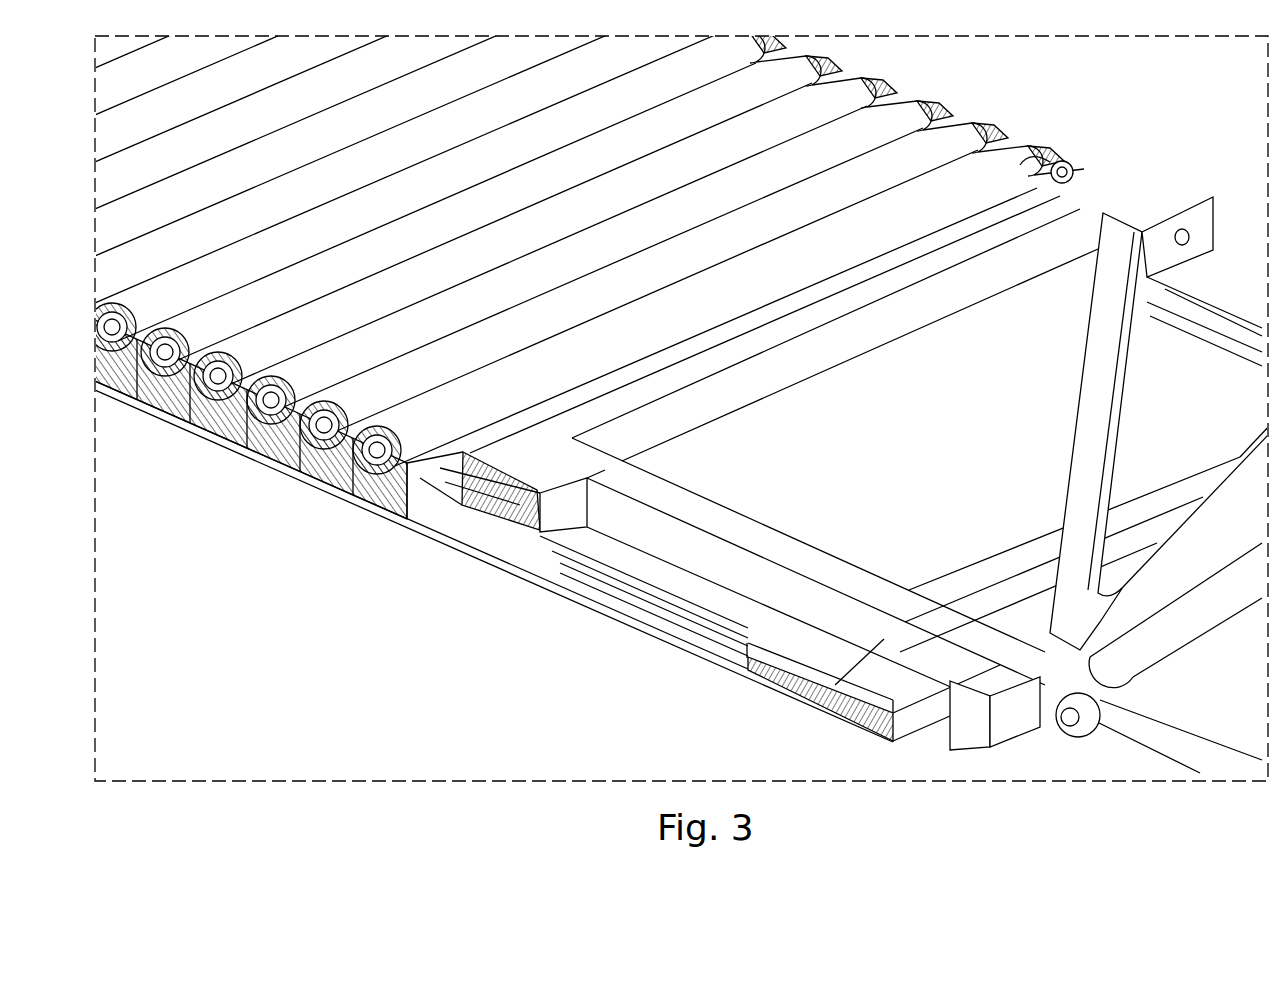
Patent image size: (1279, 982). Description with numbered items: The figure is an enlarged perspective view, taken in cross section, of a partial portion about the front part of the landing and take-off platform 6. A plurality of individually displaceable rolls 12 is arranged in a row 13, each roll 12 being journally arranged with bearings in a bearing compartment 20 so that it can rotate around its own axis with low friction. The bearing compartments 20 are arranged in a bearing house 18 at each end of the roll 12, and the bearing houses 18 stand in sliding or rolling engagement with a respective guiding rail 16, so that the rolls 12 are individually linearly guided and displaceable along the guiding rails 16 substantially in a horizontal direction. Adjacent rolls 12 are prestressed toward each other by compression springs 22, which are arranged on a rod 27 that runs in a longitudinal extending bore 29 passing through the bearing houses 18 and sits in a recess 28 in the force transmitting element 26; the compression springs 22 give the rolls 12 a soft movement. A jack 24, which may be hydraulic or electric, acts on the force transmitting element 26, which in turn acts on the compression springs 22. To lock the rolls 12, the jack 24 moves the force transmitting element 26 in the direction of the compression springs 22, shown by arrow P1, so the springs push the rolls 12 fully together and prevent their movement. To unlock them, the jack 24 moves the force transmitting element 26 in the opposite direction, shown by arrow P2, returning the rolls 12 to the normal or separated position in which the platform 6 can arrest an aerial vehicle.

The landing and take-off platform 6 is at (368, 628).
The roll 12 is at (228, 438).
The row 13 is at (960, 430).
The guiding rail 16 is at (640, 620).
The bearing house 18 is at (858, 80).
The bearing compartment 20 is at (342, 488).
The compression spring 22 is at (1073, 164).
The jack 24 is at (1075, 717).
The force transmitting element 26 is at (810, 705).
The rod 27 is at (1085, 178).
The recess 28 is at (423, 503).
The longitudinal extending bore 29 is at (503, 500).
The arrow P1 is at (1227, 733).
The arrow P2 is at (1128, 766).